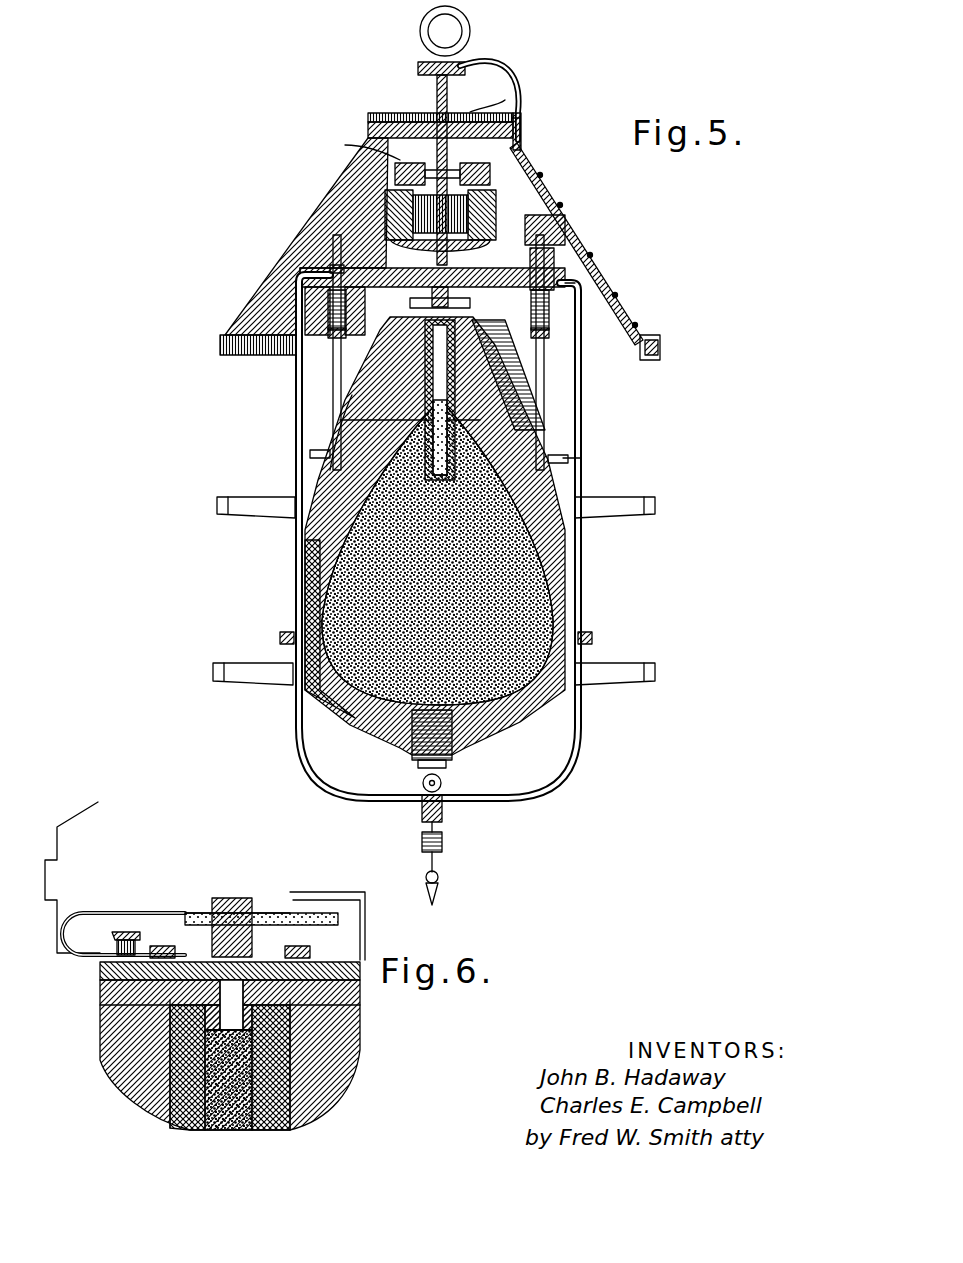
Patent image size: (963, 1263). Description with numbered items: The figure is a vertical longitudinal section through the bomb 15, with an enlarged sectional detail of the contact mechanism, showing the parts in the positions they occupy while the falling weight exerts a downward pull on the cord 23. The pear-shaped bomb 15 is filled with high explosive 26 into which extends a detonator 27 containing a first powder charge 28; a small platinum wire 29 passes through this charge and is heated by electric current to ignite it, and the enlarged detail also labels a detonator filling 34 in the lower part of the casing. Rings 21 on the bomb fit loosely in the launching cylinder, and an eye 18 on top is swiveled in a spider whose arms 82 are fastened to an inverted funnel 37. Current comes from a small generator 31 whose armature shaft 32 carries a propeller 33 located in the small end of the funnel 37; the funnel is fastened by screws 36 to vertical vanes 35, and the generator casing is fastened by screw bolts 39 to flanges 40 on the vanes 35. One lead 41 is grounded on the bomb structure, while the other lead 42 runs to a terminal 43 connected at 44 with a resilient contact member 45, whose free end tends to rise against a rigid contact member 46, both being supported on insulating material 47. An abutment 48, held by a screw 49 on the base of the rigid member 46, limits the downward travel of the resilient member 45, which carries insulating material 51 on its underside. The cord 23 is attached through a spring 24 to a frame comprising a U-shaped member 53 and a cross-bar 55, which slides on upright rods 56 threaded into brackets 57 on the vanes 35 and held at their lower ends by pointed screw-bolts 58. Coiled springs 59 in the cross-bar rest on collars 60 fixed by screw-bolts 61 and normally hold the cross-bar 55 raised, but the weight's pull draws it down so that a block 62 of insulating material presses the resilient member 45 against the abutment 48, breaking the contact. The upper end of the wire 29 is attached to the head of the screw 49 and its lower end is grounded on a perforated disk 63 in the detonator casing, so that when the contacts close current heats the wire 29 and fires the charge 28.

In FIG. 5, the bomb 15 is at (560, 640).
In FIG. 6, the bomb 15 is at (335, 1030).
In FIG. 5, the eye 18 is at (470, 31).
In FIG. 5, the rings 21 is at (215, 505).
In FIG. 5, the cord 23 is at (438, 895).
In FIG. 5, the spring 24 is at (442, 840).
In FIG. 5, the high explosive 26 is at (565, 590).
In FIG. 5, the detonator 27 is at (400, 415).
In FIG. 6, the detonator 27 is at (270, 1112).
In FIG. 5, the first powder charge 28 is at (380, 370).
In FIG. 6, the first powder charge 28 is at (300, 1080).
In FIG. 5, the wire 29 is at (390, 395).
In FIG. 6, the wire 29 is at (300, 1060).
In FIG. 5, the generator 31 is at (522, 140).
In FIG. 5, the shaft 32 is at (470, 112).
In FIG. 5, the propeller 33 is at (400, 112).
In FIG. 6, the charge 34 is at (300, 1100).
In FIG. 5, the vertical vanes 35 is at (600, 330).
In FIG. 5, the screws 36 is at (585, 250).
In FIG. 5, the inverted funnel 37 is at (312, 245).
In FIG. 5, the screw bolts 39 is at (395, 210).
In FIG. 5, the flanges 40 is at (385, 195).
In FIG. 5, the lead 41 is at (470, 185).
In FIG. 5, the lead 42 is at (345, 145).
In FIG. 6, the lead 42 is at (77, 866).
In FIG. 5, the terminal 43 is at (395, 240).
In FIG. 6, the connection 44 is at (120, 930).
In FIG. 5, the resilient contact member 45 is at (432, 267).
In FIG. 6, the resilient contact member 45 is at (160, 912).
In FIG. 5, the rigid contact member 46 is at (530, 290).
In FIG. 6, the rigid contact member 46 is at (310, 892).
In FIG. 6, the insulating material 47 is at (362, 975).
In FIG. 6, the abutment 48 is at (252, 940).
In FIG. 6, the screw 49 is at (200, 940).
In FIG. 6, the insulating material 51 is at (338, 920).
In FIG. 5, the U-shaped member 53 is at (558, 760).
In FIG. 5, the cross-bar 55 is at (565, 275).
In FIG. 5, the upright rods 56 is at (340, 440).
In FIG. 5, the brackets 57 is at (555, 218).
In FIG. 5, the pointed screw-bolts 58 is at (575, 458).
In FIG. 5, the coiled springs 59 is at (560, 300).
In FIG. 5, the collars 60 is at (330, 320).
In FIG. 5, the screw-bolts 61 is at (333, 345).
In FIG. 5, the block of insulating material 62 is at (440, 287).
In FIG. 6, the block of insulating material 62 is at (232, 898).
In FIG. 5, the perforated disk 63 is at (510, 350).
In FIG. 5, the arms 82 is at (505, 70).